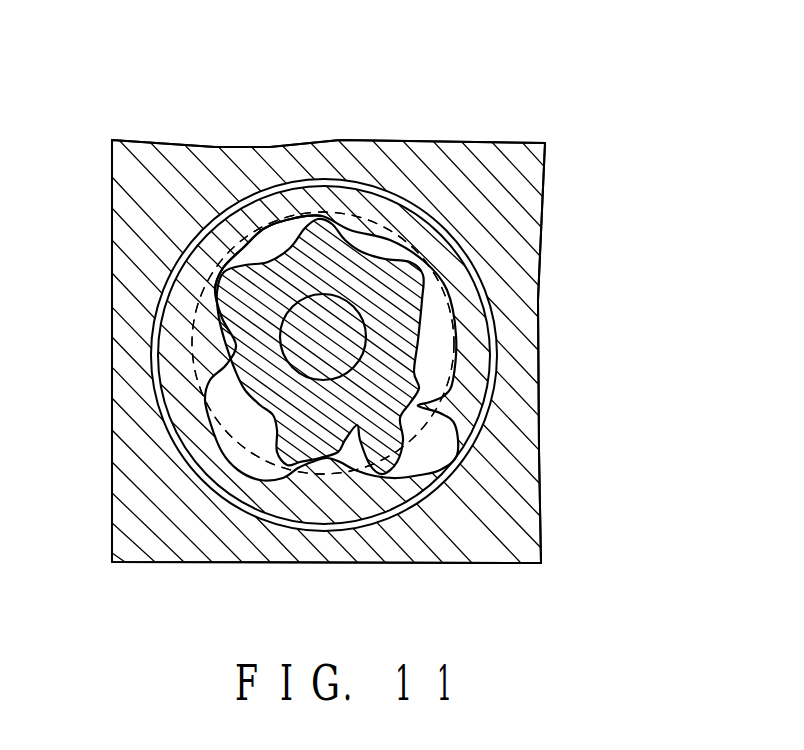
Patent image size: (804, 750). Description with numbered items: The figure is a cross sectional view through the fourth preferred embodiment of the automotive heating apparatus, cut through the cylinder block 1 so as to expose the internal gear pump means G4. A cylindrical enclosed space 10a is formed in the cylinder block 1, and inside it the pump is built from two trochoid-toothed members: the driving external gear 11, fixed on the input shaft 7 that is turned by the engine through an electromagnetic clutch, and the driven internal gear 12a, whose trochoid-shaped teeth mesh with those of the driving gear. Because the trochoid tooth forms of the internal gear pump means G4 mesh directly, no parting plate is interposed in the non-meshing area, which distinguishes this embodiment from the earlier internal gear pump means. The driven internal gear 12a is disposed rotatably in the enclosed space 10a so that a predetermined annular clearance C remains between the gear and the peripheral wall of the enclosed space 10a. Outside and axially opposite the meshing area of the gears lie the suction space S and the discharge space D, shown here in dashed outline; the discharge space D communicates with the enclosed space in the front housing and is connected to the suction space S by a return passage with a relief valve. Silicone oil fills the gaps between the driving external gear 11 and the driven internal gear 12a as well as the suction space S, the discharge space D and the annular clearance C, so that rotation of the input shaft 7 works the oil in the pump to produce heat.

The cylinder block 1 is at (390, 153).
The input shaft 7 is at (233, 255).
The enclosed space 10a is at (323, 183).
The driving external gear 11 is at (383, 303).
The driven internal gear 12a is at (423, 473).
The annular clearance C is at (260, 183).
The discharge space D is at (200, 322).
The suction space S is at (458, 228).
The internal gear pump means G4 is at (465, 132).